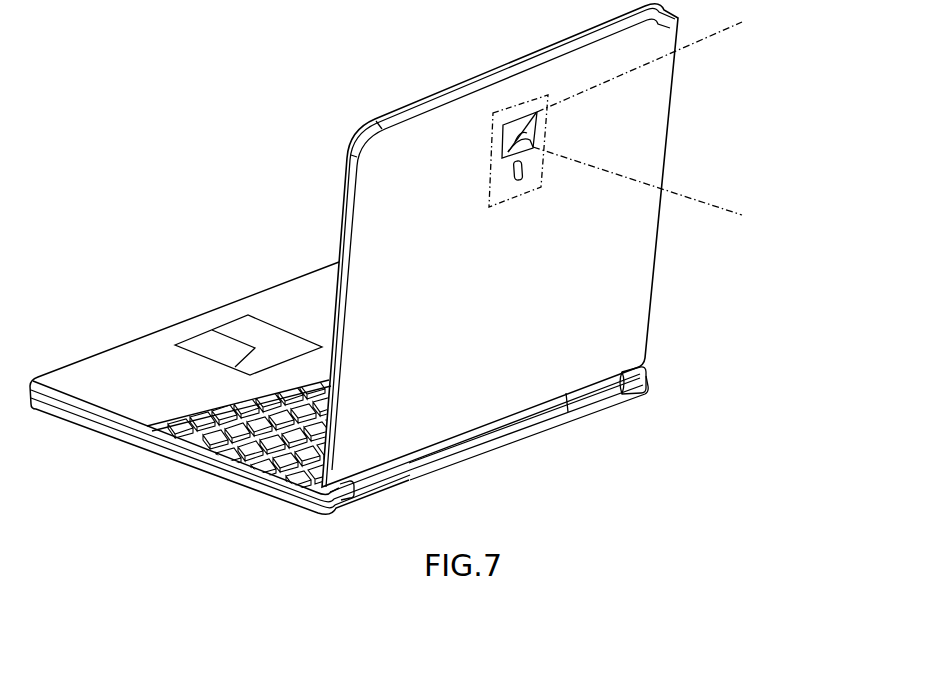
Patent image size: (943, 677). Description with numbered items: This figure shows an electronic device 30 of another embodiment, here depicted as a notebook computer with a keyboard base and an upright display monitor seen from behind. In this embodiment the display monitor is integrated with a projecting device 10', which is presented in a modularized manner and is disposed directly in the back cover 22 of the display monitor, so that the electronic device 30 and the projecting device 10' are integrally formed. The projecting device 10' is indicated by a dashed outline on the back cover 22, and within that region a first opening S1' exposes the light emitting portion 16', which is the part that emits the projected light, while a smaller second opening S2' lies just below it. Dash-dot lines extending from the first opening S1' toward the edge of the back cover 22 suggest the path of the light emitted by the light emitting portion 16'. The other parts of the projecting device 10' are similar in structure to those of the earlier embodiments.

The light emitting portion 16' is at (519, 85).
The first opening S1' is at (482, 137).
The second opening S2' is at (474, 181).
The projecting device 10' is at (487, 160).
The back cover 22 is at (632, 273).
The electronic device 30 is at (705, 365).